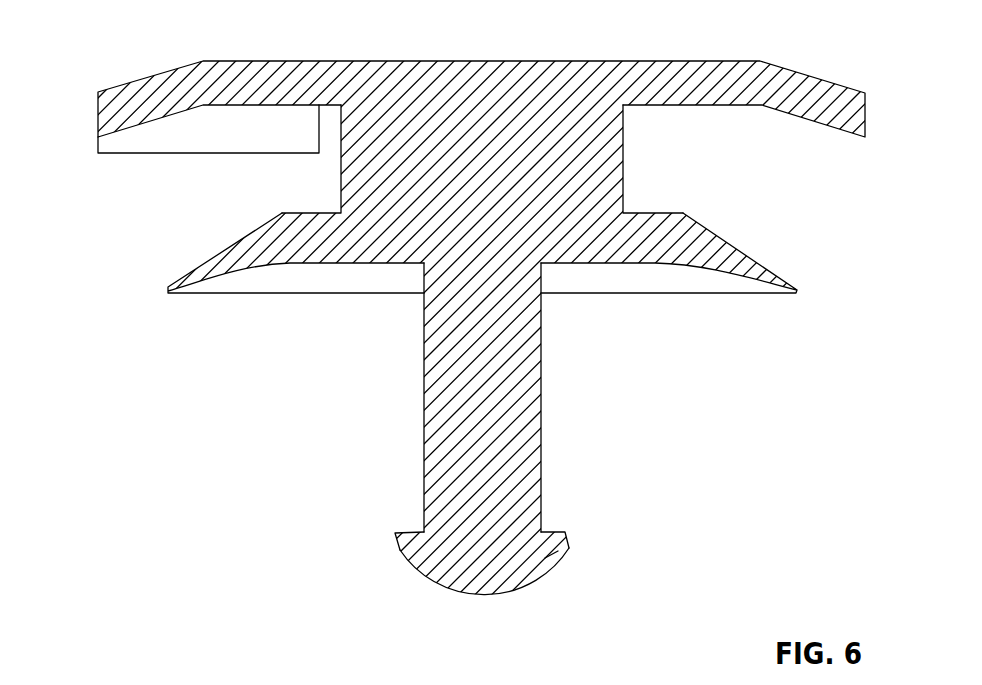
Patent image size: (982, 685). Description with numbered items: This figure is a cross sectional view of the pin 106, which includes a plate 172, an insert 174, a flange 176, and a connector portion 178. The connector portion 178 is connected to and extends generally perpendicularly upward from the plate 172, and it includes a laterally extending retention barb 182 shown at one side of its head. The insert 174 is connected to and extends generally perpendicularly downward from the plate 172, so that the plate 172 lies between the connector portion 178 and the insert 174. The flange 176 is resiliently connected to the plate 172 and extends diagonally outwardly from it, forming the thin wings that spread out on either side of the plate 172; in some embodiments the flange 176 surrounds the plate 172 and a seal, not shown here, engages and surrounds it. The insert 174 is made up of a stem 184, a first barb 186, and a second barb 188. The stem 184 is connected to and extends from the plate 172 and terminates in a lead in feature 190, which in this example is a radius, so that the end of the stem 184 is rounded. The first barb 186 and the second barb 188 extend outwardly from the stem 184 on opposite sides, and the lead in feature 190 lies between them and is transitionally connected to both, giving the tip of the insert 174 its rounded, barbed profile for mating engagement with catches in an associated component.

The pin 106 is at (133, 38).
The connector portion 178 is at (413, 78).
The retention barb 182 is at (258, 140).
The plate 172 is at (649, 220).
The flange 176 is at (758, 272).
The insert 174 is at (472, 370).
The stem 184 is at (513, 420).
The first barb 186 is at (414, 546).
The second barb 188 is at (560, 553).
The lead in feature 190 is at (478, 580).